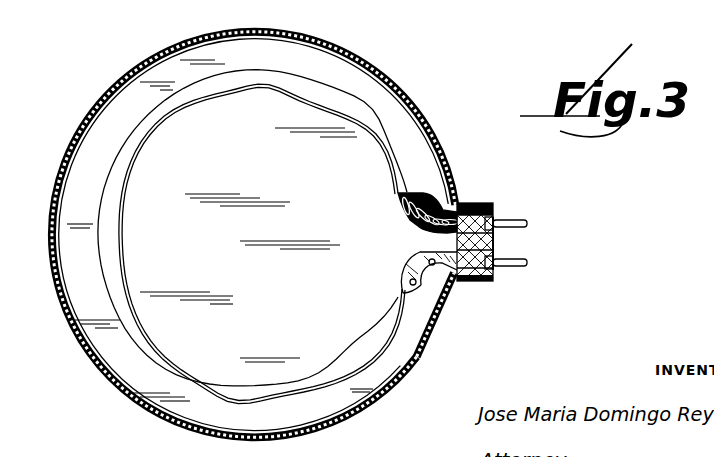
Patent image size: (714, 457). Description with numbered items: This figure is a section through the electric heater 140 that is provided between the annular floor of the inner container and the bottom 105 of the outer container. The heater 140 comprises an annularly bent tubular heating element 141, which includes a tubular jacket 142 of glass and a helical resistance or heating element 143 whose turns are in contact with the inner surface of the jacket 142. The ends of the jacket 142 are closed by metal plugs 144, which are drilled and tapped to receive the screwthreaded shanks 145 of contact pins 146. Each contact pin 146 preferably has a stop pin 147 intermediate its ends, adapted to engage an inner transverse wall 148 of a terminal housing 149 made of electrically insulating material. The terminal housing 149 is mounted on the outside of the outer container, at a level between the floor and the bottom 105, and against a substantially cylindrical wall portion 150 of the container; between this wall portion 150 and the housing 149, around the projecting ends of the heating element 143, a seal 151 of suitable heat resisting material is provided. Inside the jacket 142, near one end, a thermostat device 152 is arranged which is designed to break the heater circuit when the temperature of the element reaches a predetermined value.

The electric heater 140 is at (345, 292).
The bottom of the outer container 105 is at (121, 88).
The substantially cylindrical wall portion 150 is at (69, 158).
The thermostat device 152 is at (421, 357).
The tubular jacket 142 is at (384, 132).
The annularly bent tubular heating element 141 is at (207, 108).
The helical resistance or heating element 143 is at (428, 192).
The metal plugs 144 is at (455, 278).
The inner transverse wall 148 is at (482, 242).
The seal 151 is at (458, 204).
The screwthreaded shanks 145 is at (476, 204).
The contact pins 146 is at (528, 262).
The stop pin 147 is at (497, 219).
The terminal housing 149 is at (483, 281).